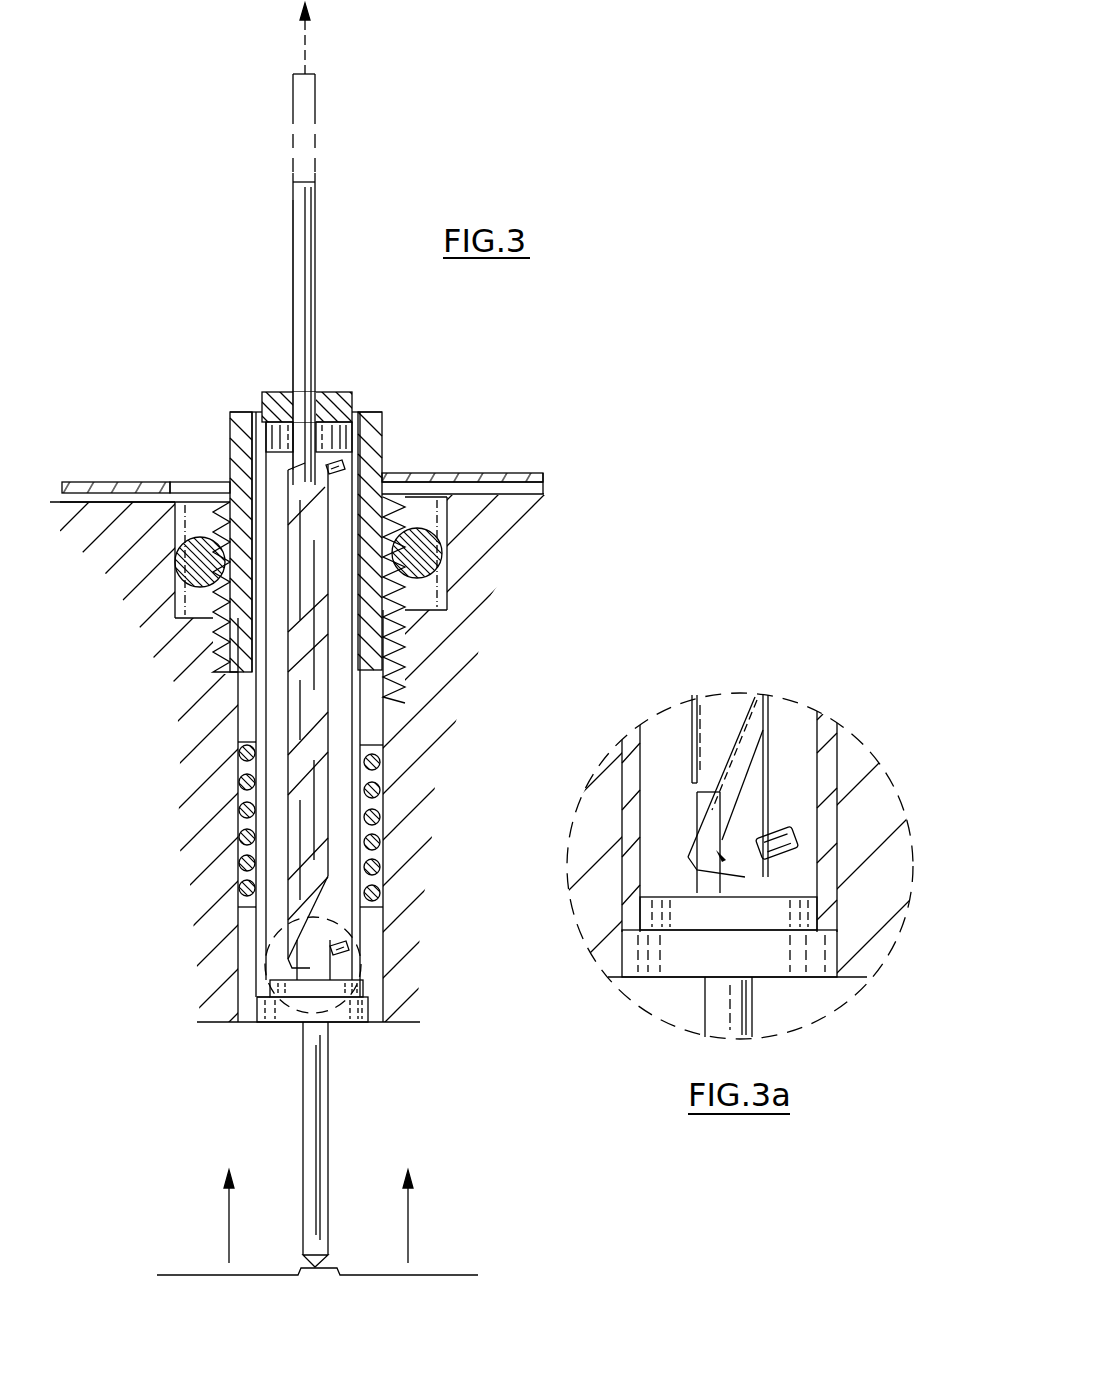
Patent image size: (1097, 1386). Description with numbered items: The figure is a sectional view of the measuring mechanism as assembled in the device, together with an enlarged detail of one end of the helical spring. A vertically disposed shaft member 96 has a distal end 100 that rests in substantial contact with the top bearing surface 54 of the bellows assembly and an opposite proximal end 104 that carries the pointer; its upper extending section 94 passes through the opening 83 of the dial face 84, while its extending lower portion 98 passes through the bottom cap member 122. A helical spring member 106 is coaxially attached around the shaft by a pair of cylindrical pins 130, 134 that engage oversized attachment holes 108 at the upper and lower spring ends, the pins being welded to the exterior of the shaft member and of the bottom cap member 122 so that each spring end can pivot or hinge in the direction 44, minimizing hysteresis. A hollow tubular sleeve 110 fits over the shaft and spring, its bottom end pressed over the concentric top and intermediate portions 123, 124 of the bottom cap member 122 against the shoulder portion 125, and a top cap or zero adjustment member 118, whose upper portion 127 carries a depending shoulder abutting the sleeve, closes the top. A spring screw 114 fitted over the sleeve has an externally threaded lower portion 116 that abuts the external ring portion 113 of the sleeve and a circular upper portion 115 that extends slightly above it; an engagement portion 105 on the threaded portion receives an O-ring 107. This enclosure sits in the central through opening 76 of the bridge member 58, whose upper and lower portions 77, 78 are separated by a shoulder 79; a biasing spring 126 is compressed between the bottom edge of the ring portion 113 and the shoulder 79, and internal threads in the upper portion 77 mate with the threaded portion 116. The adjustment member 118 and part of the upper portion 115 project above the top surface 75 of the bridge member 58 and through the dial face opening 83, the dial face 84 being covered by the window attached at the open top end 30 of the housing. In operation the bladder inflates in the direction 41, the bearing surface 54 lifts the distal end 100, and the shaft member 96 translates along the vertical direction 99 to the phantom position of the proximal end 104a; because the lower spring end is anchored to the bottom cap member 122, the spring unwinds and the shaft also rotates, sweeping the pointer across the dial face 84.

In FIG. 3, the open top end 30 is at (175, 614).
In FIG. 3, the inflation direction 41 is at (229, 1208).
In FIG. 3a, the pivoting direction 44 is at (723, 862).
In FIG. 3, the top bearing surface 54 is at (322, 1278).
In FIG. 3, the bridge member 58 is at (138, 544).
In FIG. 3, the top surface 75 is at (50, 500).
In FIG. 3, the central through opening 76 is at (180, 508).
In FIG. 3, the upper portion 77 is at (238, 797).
In FIG. 3, the lower portion 78 is at (368, 1024).
In FIG. 3, the shoulder 79 is at (240, 902).
In FIG. 3, the dial face opening 83 is at (395, 473).
In FIG. 3, the dial face 84 is at (500, 473).
In FIG. 3, the upper extending section 94 is at (293, 262).
In FIG. 3, the shaft member 96 is at (293, 303).
In FIG. 3a, the shaft member 96 is at (705, 722).
In FIG. 3, the lower portion 98 is at (303, 1118).
In FIG. 3, the vertical direction 99 is at (305, 42).
In FIG. 3, the distal end 100 is at (308, 1258).
In FIG. 3, the proximal end 104 is at (293, 181).
In FIG. 3, the proximal end (displaced position) 104a is at (293, 75).
In FIG. 3, the engagement portion 105 is at (177, 572).
In FIG. 3, the spring member 106 is at (298, 735).
In FIG. 3, the O-ring 107 is at (432, 553).
In FIG. 3a, the attachment holes 108 is at (765, 815).
In FIG. 3a, the tubular sleeve 110 is at (818, 912).
In FIG. 3, the external ring portion 113 is at (372, 720).
In FIG. 3, the spring screw 114 is at (228, 418).
In FIG. 3, the upper portion 115 is at (253, 452).
In FIG. 3, the threaded lower portion 116 is at (402, 638).
In FIG. 3, the top cap member 118 is at (355, 392).
In FIG. 3, the bottom cap member 122 is at (363, 992).
In FIG. 3a, the bottom cap member 122 is at (793, 953).
In FIG. 3, the top portion 123 is at (300, 938).
In FIG. 3, the intermediate portion 124 is at (270, 985).
In FIG. 3, the shoulder portion 125 is at (262, 1008).
In FIG. 3, the biasing spring 126 is at (240, 783).
In FIG. 3, the upper portion 127 is at (265, 395).
In FIG. 3, the cylindrical pin 130 is at (350, 953).
In FIG. 3a, the cylindrical pin 130 is at (782, 840).
In FIG. 3, the cylindrical pin 134 is at (335, 466).